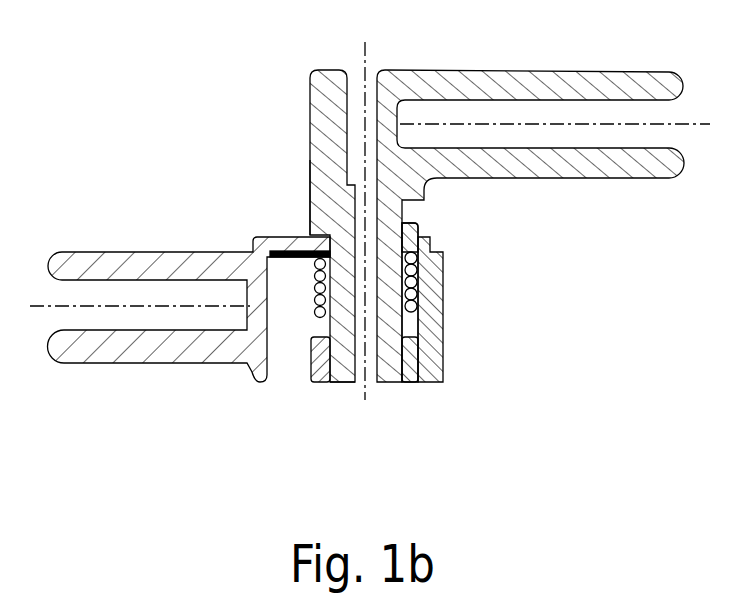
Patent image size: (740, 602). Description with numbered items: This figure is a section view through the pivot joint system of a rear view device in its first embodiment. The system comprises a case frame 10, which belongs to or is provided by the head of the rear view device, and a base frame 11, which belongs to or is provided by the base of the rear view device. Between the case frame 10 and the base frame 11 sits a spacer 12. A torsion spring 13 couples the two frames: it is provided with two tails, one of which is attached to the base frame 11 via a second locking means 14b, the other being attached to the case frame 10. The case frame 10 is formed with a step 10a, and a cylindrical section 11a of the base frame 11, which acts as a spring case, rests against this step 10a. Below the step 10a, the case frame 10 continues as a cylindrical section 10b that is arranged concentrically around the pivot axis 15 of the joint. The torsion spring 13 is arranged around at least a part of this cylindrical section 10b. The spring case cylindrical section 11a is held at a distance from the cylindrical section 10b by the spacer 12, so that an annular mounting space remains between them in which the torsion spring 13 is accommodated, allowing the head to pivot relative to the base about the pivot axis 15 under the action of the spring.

The case frame 10 is at (420, 183).
The step 10a is at (310, 220).
The cylindrical section 10b is at (345, 382).
The base frame 11 is at (247, 262).
The cylindrical section 11a is at (430, 348).
The spacer 12 is at (410, 382).
The torsion spring 13 is at (417, 290).
The second locking means 14b is at (287, 252).
The pivot axis 15 is at (366, 48).